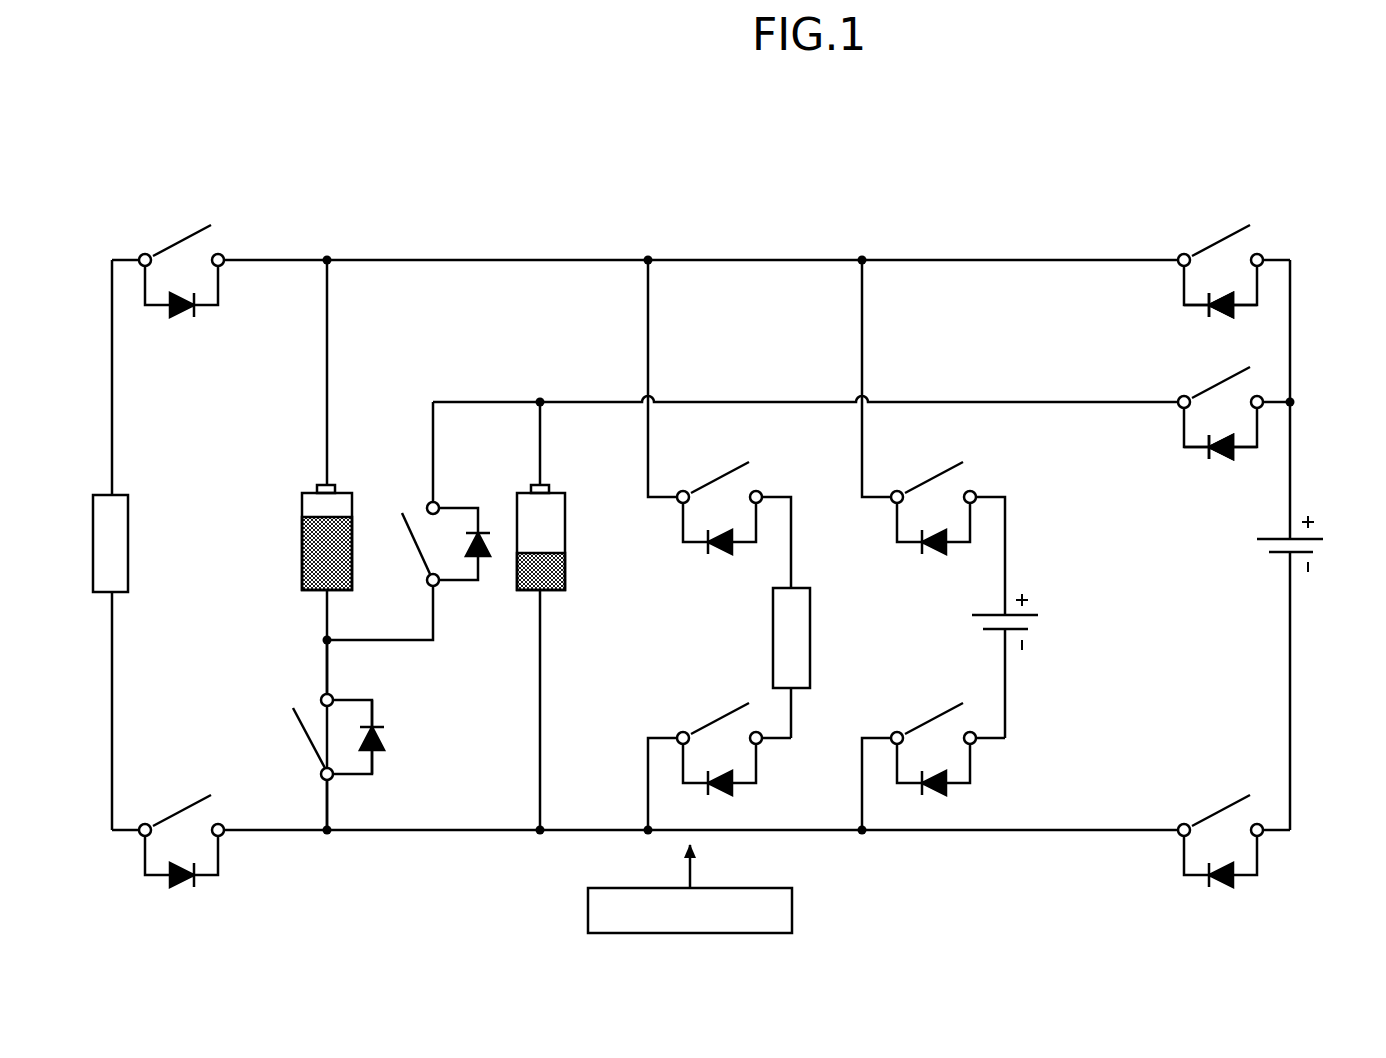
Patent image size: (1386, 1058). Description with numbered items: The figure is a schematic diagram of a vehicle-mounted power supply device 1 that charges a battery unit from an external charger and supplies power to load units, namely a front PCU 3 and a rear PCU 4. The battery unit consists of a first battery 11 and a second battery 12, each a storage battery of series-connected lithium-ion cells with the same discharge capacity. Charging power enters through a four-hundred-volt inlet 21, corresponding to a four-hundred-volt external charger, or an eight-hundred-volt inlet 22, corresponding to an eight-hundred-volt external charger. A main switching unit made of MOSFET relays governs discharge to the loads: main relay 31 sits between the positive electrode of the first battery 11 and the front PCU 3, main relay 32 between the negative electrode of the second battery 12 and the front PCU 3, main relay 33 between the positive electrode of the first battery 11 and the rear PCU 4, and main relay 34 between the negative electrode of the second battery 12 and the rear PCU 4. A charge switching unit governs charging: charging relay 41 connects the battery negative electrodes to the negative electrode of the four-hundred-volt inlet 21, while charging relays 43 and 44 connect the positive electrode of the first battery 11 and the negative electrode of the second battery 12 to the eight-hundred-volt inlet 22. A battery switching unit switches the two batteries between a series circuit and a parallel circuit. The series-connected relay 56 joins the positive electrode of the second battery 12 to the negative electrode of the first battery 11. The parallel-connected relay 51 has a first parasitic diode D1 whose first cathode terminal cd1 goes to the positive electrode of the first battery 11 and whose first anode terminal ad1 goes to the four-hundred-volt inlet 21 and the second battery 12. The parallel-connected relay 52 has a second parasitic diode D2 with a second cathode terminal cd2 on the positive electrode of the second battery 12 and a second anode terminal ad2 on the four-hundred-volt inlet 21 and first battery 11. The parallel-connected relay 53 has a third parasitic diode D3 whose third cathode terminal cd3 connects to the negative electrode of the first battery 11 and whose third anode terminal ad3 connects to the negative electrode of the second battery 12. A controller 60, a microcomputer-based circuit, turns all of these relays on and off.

The power supply device 1 is at (784, 161).
The front power control unit (PCU) 3 is at (128, 529).
The rear PCU 4 is at (810, 608).
The first battery 11 is at (352, 490).
The second battery 12 is at (565, 530).
The 400 V inlet 21 is at (1290, 538).
The 800 V inlet 22 is at (1005, 613).
The main relay 31 is at (158, 248).
The main relay 32 is at (176, 790).
The main relay 33 is at (718, 472).
The main relay 34 is at (704, 714).
The charging relay 41 is at (1209, 803).
The charging relay 43 is at (927, 472).
The charging relay 44 is at (914, 714).
The parallel-connected relay 51 is at (1212, 232).
The parallel-connected relay 52 is at (1196, 383).
The parallel-connected relay 53 is at (302, 748).
The series-connected relay 56 is at (410, 560).
The controller 60 is at (752, 886).
The first cathode terminal cd1 is at (1195, 305).
The first anode terminal ad1 is at (1247, 305).
The first parasitic diode D1 is at (1224, 318).
The second cathode terminal cd2 is at (1195, 447).
The second anode terminal ad2 is at (1247, 447).
The second parasitic diode D2 is at (1224, 460).
The third cathode terminal cd3 is at (372, 712).
The third parasitic diode D3 is at (382, 735).
The third anode terminal ad3 is at (372, 765).